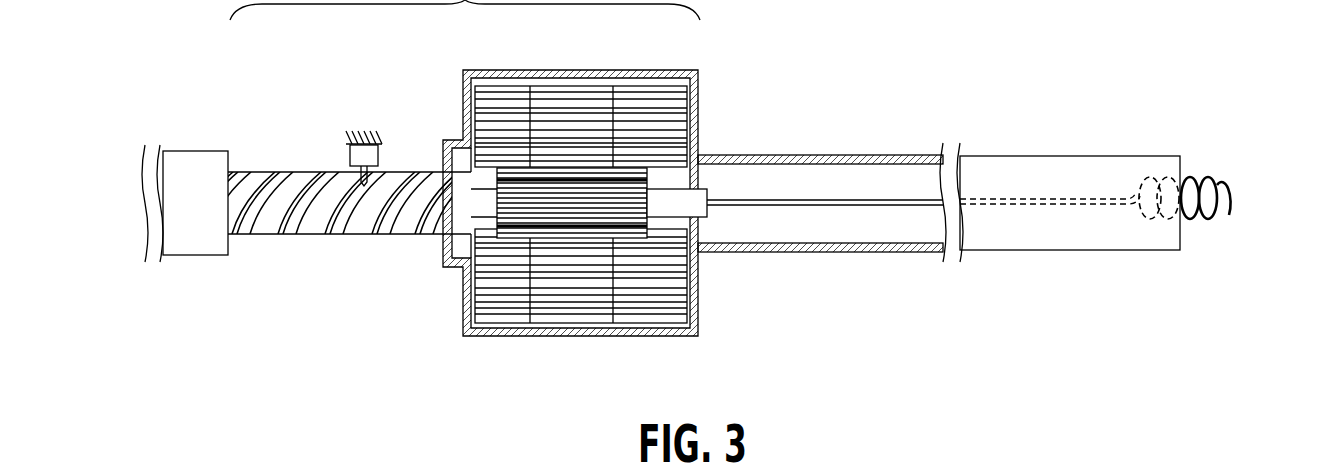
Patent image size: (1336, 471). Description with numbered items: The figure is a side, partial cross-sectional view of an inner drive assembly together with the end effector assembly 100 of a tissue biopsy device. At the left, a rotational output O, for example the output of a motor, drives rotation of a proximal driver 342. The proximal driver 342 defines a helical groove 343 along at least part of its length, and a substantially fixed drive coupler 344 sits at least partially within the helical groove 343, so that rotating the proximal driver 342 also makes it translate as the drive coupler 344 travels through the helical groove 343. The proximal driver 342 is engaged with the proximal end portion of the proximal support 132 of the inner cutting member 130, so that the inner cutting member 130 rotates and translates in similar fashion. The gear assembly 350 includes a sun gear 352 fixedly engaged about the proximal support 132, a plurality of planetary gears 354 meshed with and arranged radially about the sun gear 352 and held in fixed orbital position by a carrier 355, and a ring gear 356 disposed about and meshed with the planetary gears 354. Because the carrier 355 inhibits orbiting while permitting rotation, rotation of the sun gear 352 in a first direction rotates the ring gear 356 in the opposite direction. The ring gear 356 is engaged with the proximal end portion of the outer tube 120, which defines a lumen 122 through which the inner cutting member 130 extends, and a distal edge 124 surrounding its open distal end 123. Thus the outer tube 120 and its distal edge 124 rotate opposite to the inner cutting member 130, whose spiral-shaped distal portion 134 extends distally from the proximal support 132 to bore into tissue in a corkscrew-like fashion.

The end effector assembly 100 is at (988, 174).
The outer tube 120 is at (830, 214).
The lumen 122 is at (853, 180).
The open distal end 123 is at (1060, 250).
The distal edge 124 is at (1180, 170).
The inner cutting member 130 is at (785, 205).
The proximal support 132 is at (698, 185).
The spiral-shaped distal portion 134 is at (1234, 157).
The proximal driver 342 is at (333, 210).
The helical groove 343 is at (318, 187).
The drive coupler 344 is at (382, 168).
The gear assembly 350 is at (549, 213).
The sun gear 352 is at (563, 168).
The planetary gears 354 is at (641, 110).
The carrier 355 is at (443, 252).
The ring gear 356 is at (543, 336).
The rotational output O is at (200, 160).